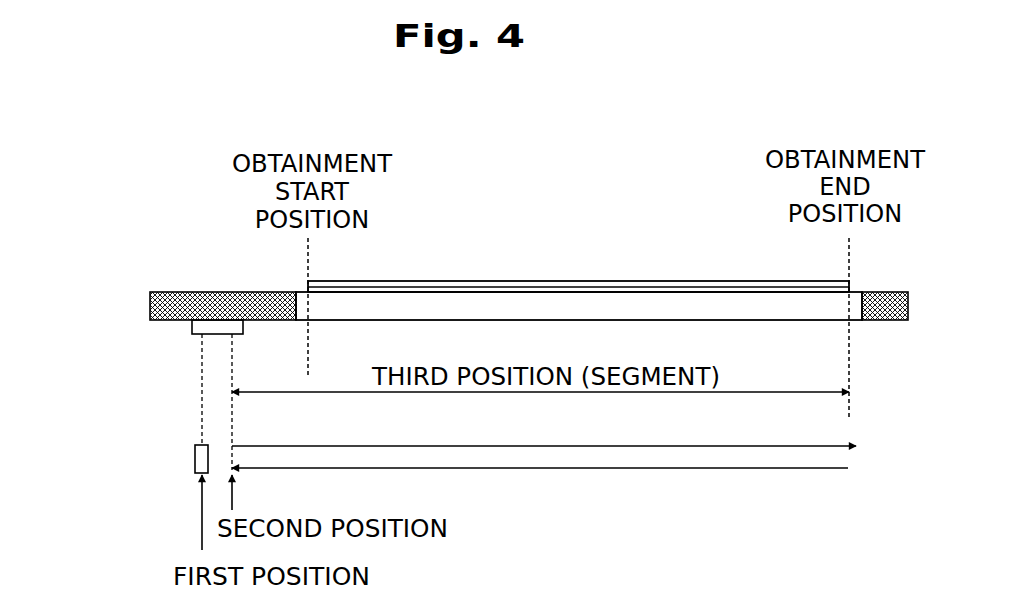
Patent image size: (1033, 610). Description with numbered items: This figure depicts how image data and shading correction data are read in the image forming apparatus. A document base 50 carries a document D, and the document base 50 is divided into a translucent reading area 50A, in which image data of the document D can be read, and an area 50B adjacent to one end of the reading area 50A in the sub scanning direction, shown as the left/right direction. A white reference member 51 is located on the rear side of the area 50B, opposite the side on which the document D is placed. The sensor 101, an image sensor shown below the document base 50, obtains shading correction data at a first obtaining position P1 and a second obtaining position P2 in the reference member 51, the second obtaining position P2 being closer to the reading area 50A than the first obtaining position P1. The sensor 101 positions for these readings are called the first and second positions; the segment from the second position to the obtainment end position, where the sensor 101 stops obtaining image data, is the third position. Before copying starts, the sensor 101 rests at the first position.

The document base 50 is at (476, 244).
The area 50B is at (198, 305).
The reading area 50A is at (424, 305).
The document D is at (606, 285).
The reference member 51 is at (192, 333).
The first obtaining position P1 is at (202, 338).
The second obtaining position P2 is at (232, 338).
The sensor 101 is at (195, 455).